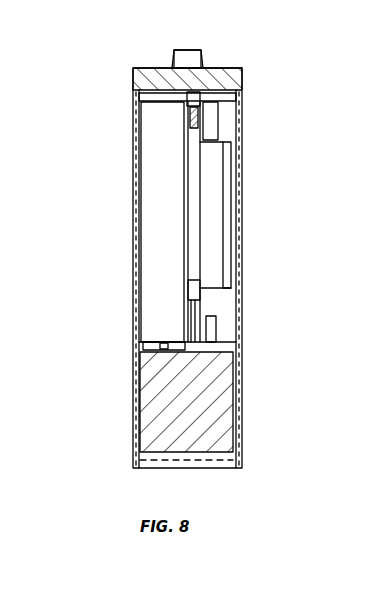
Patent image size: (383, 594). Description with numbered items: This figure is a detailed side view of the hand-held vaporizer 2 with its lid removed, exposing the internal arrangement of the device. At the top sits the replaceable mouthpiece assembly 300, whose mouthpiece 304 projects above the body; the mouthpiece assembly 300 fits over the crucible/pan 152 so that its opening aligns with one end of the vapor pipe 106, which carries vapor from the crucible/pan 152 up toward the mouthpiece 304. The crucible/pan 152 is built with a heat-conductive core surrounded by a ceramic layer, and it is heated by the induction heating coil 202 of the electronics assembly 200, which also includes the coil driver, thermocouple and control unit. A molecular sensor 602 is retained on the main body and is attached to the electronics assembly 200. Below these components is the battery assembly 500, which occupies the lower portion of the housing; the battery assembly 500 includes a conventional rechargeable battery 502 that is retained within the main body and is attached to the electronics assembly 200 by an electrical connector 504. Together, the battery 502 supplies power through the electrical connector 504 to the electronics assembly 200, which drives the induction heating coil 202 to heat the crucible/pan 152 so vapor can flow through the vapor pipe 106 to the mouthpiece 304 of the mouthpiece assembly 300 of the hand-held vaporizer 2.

The hand-held vaporizer 2 is at (269, 46).
The mouthpiece assembly 300 is at (190, 46).
The mouthpiece 304 is at (170, 62).
The vapor pipe 106 is at (213, 123).
The crucible/pan 152 is at (231, 153).
The induction heating coil 202 is at (197, 195).
The battery 502 is at (152, 183).
The battery assembly 500 is at (129, 249).
The electrical connector 504 is at (143, 352).
The molecular sensor 602 is at (214, 323).
The electronics assembly 200 is at (249, 407).